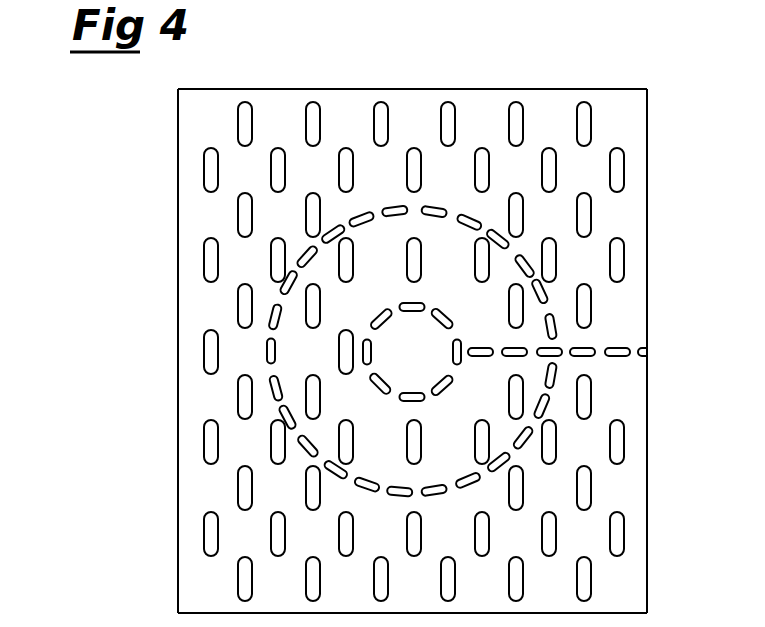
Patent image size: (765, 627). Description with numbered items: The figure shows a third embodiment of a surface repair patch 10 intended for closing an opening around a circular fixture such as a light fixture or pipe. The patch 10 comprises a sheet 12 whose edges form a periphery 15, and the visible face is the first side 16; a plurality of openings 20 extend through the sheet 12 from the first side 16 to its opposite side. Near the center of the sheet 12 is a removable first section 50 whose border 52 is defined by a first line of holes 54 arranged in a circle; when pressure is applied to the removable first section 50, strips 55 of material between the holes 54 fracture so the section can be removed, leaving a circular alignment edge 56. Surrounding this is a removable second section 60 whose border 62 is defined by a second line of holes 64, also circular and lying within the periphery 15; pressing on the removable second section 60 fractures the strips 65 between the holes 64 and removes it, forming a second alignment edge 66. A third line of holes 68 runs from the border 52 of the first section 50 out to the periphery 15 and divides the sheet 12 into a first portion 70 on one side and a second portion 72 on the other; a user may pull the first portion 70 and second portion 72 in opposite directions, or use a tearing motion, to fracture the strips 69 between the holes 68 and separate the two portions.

The surface repair patch 10 is at (134, 146).
The sheet 12 is at (194, 484).
The periphery 15 is at (484, 89).
The first side 16 is at (424, 592).
The openings 20 is at (622, 513).
The removable first section 50 is at (425, 348).
The border 52 is at (368, 328).
The first line of holes 54 is at (370, 372).
The strips 55 is at (430, 392).
The alignment edge 56 is at (459, 307).
The removable second section 60 is at (391, 290).
The border 62 is at (377, 200).
The second line of holes 64 is at (272, 314).
The strips 65 is at (480, 230).
The second alignment edge 66 is at (441, 198).
The third line of holes 68 is at (610, 349).
The strips 69 is at (633, 358).
The first portion 70 is at (633, 335).
The second portion 72 is at (633, 372).